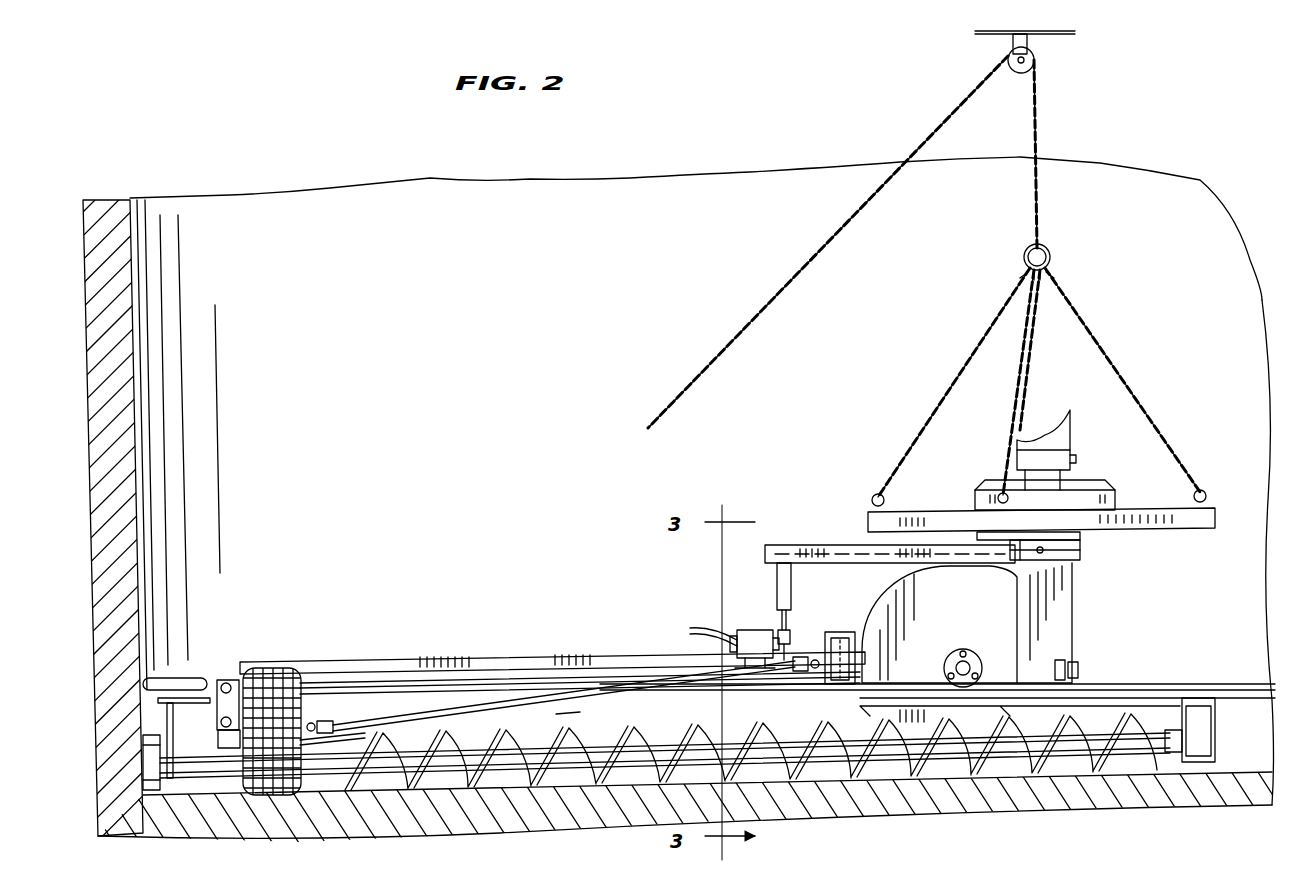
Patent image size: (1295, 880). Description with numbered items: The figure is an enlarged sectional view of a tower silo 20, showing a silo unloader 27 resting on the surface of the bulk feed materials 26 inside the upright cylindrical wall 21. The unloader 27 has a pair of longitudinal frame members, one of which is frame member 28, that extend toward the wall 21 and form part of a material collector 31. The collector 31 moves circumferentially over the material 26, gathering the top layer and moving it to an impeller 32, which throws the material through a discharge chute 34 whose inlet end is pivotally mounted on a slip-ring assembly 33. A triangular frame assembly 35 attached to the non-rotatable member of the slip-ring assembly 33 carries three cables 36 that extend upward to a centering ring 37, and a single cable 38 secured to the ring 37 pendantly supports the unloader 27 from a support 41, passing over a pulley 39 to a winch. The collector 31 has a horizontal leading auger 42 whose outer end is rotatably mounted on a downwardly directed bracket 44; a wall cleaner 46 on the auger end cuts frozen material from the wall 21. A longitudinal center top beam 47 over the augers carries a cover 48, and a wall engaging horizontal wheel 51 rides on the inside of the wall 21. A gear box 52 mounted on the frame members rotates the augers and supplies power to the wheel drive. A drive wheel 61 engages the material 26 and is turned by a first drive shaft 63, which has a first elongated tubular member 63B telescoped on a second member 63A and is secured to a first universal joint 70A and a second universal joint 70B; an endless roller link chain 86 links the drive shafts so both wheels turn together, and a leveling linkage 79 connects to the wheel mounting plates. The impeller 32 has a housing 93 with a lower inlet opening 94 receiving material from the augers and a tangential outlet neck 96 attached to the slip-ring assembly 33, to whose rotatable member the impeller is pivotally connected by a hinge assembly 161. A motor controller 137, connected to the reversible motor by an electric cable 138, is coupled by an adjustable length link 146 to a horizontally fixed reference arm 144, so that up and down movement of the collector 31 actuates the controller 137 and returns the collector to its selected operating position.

The tower silo 20 is at (200, 185).
The upright cylindrical wall 21 is at (123, 282).
The bulk feed materials 26 is at (1148, 796).
The silo unloader 27 is at (618, 472).
The longitudinal frame member 28 is at (1222, 684).
The material collector 31 is at (406, 645).
The impeller 32 is at (1076, 626).
The slip-ring assembly 33 is at (1105, 488).
The discharge chute 34 is at (1042, 440).
The triangular frame assembly 35 is at (1190, 524).
The cable 36 is at (970, 352).
The centering ring 37 is at (1051, 256).
The cable 38 is at (1040, 100).
The pulley 39 is at (1020, 74).
The support 41 is at (985, 32).
The leading auger 42 is at (822, 752).
The bracket 44 is at (175, 705).
The wall cleaner 46 is at (150, 773).
The center top beam 47 is at (474, 655).
The cover 48 is at (598, 668).
The wall engaging horizontal wheel 51 is at (198, 676).
The gear box 52 is at (1212, 732).
The drive wheel 61 is at (287, 668).
The first drive shaft 63 is at (656, 682).
The second member 63A is at (556, 716).
The first elongated tubular member 63B is at (370, 740).
The first universal joint 70A is at (806, 656).
The second universal joint 70B is at (322, 668).
The leveling linkage 79 is at (225, 658).
The endless roller link chain 86 is at (838, 632).
The housing 93 is at (968, 621).
The lower inlet opening 94 is at (880, 718).
The tangential outlet neck 96 is at (1056, 658).
The motor controller 137 is at (756, 636).
The electric cable 138 is at (700, 626).
The reference arm 144 is at (826, 546).
The adjustable length link 146 is at (770, 578).
The hinge assembly 161 is at (1086, 557).